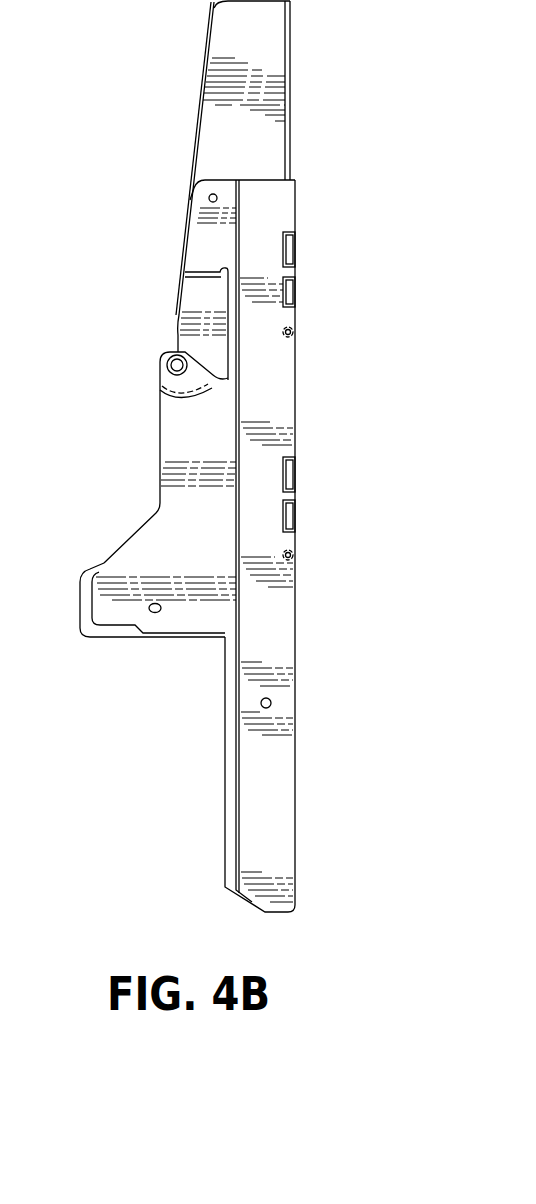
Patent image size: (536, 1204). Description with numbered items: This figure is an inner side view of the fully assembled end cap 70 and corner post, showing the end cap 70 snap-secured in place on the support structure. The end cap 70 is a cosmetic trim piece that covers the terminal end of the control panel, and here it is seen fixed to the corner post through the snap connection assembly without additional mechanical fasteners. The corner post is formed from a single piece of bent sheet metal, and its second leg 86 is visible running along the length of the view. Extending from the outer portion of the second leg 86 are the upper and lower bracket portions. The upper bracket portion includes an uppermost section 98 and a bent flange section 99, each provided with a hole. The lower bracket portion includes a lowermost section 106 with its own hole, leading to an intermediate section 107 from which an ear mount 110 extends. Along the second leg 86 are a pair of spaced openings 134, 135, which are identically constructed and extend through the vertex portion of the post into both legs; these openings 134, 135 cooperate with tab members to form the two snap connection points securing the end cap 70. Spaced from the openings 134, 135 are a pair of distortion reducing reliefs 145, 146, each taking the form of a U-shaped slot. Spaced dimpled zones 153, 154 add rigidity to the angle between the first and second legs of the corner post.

The end cap 70 is at (333, 92).
The uppermost section 98 is at (203, 240).
The bent flange section 99 is at (185, 290).
The ear mount 110 is at (167, 382).
The intermediate section 107 is at (177, 450).
The lowermost section 106 is at (180, 617).
The second leg 86 is at (267, 372).
The distortion reducing relief 145 is at (297, 250).
The opening 134 is at (297, 292).
The dimpled zone 153 is at (296, 333).
The distortion reducing relief 146 is at (297, 476).
The opening 135 is at (297, 518).
The dimpled zone 154 is at (296, 556).